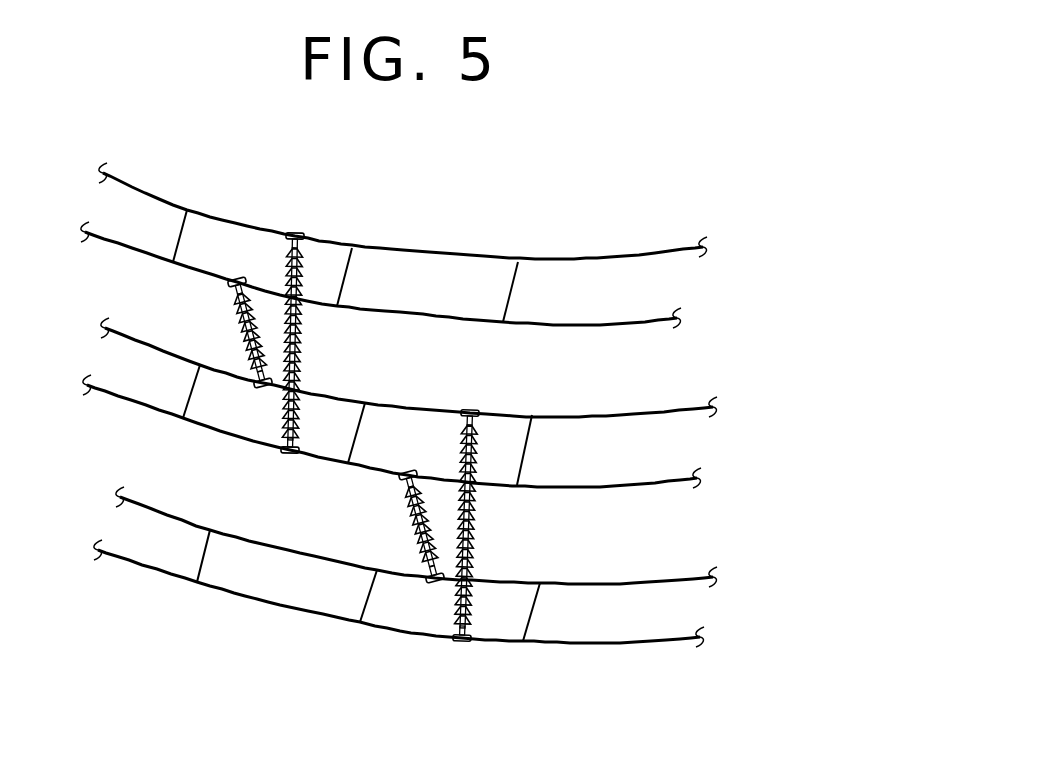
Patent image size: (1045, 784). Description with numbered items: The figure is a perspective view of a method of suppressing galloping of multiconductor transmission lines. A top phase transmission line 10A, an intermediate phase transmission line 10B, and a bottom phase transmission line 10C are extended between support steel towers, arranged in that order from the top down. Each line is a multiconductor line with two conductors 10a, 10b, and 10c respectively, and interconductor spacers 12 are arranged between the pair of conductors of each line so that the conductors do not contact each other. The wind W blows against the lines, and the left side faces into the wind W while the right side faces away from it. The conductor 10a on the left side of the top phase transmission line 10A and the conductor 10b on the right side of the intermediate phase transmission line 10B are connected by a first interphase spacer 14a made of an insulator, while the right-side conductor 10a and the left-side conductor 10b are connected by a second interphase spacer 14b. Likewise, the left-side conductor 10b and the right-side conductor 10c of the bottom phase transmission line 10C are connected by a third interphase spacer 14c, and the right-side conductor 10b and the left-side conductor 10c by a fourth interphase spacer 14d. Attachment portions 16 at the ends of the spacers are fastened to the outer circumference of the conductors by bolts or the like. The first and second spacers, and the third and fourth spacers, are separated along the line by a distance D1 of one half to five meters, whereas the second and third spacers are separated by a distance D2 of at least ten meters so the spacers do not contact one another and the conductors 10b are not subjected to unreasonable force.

The top phase transmission line 10A is at (692, 292).
The intermediate phase transmission line 10B is at (704, 452).
The bottom phase transmission line 10C is at (711, 602).
The conductor 10a is at (587, 257).
The conductor 10b is at (608, 419).
The conductor 10c is at (612, 589).
The interconductor spacer 12 is at (176, 232).
The first interphase spacer 14a is at (244, 337).
The second interphase spacer 14b is at (301, 343).
The third interphase spacer 14c is at (418, 538).
The fourth interphase spacer 14d is at (474, 528).
The attachment portion 16 is at (298, 233).
The distance between interphase spacers D1 is at (232, 287).
The distance between interphase spacers D2 is at (297, 457).
The wind W is at (58, 548).